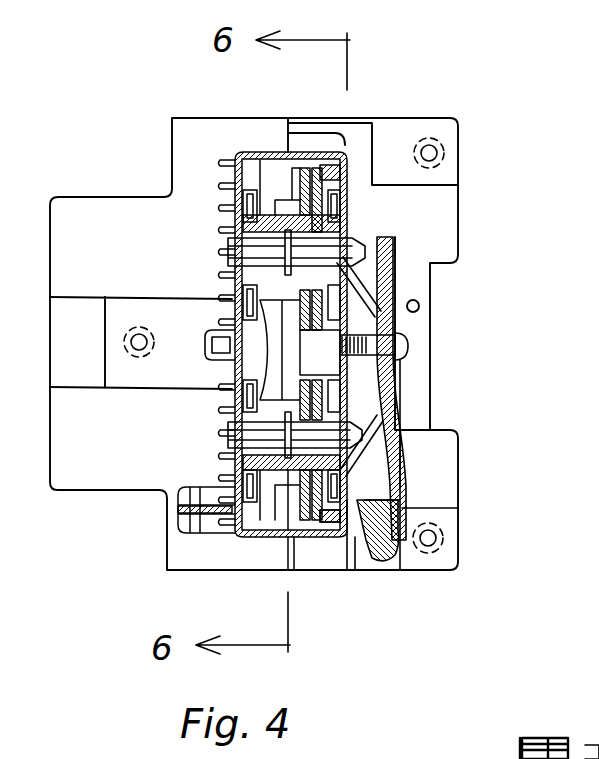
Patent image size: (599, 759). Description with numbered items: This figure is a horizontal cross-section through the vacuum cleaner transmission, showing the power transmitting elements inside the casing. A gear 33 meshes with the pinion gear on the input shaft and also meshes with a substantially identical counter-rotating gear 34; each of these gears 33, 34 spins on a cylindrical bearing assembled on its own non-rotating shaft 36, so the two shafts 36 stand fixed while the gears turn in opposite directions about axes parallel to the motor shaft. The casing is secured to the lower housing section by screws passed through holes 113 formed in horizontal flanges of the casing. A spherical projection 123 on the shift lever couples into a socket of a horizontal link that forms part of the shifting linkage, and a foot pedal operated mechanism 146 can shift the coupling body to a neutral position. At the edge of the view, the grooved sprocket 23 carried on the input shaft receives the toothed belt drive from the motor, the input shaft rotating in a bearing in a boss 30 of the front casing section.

The gear 33 is at (340, 182).
The counter-rotating gear 34 is at (335, 525).
The non-rotating shaft 36 is at (330, 258).
The hole 113 is at (437, 153).
The spherical projection 123 is at (403, 556).
The foot pedal operated mechanism 146 is at (218, 342).
The grooved sprocket 23 is at (553, 738).
The boss 30 is at (587, 758).